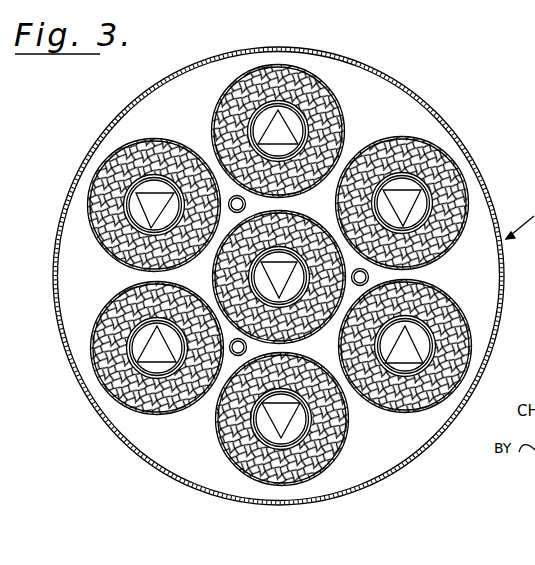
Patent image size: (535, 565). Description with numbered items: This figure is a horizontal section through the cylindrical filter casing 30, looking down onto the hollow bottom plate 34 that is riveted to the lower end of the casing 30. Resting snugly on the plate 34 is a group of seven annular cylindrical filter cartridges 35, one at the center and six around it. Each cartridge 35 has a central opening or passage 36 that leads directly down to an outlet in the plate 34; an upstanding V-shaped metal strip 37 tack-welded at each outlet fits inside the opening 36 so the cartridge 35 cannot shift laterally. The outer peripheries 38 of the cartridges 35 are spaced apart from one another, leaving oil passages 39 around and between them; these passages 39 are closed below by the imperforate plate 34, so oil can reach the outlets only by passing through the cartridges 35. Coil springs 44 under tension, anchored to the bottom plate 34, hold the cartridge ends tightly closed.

The filter casing 30 is at (445, 124).
The bottom plate 34 is at (201, 458).
The filter cartridge 35 is at (108, 302).
The central opening 36 is at (158, 176).
The central passage 37 is at (147, 207).
The outer periphery 38 is at (153, 137).
The oil passage 39 is at (208, 286).
The coil spring 44 is at (263, 372).